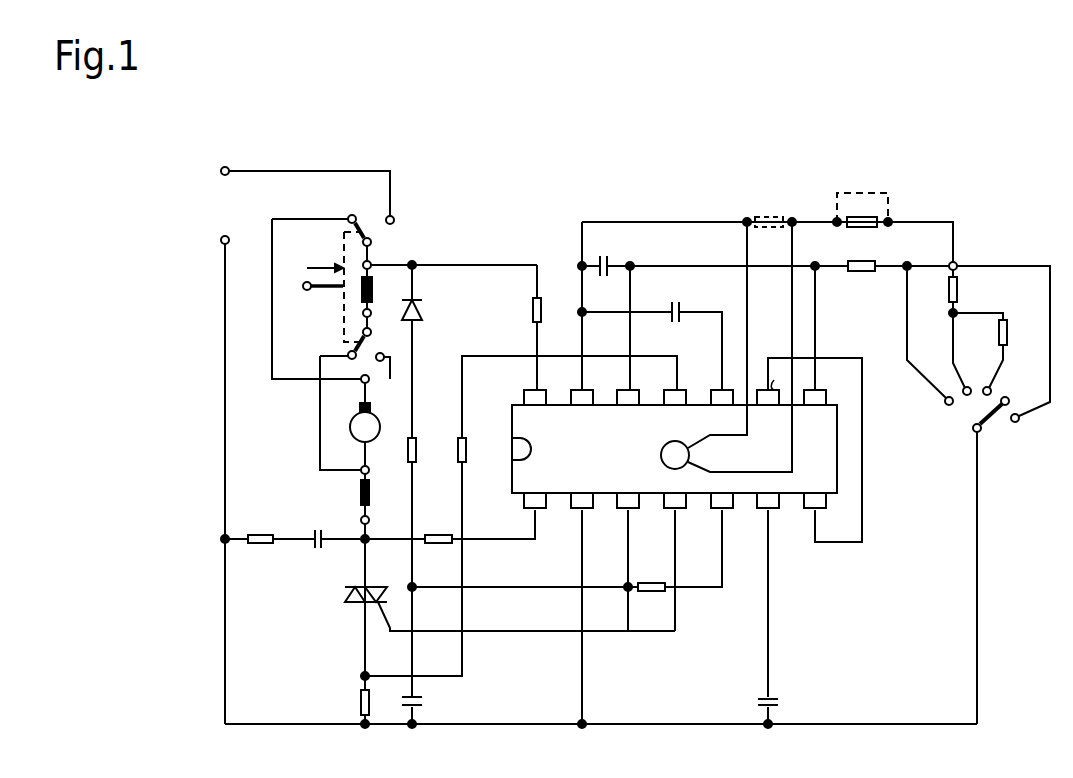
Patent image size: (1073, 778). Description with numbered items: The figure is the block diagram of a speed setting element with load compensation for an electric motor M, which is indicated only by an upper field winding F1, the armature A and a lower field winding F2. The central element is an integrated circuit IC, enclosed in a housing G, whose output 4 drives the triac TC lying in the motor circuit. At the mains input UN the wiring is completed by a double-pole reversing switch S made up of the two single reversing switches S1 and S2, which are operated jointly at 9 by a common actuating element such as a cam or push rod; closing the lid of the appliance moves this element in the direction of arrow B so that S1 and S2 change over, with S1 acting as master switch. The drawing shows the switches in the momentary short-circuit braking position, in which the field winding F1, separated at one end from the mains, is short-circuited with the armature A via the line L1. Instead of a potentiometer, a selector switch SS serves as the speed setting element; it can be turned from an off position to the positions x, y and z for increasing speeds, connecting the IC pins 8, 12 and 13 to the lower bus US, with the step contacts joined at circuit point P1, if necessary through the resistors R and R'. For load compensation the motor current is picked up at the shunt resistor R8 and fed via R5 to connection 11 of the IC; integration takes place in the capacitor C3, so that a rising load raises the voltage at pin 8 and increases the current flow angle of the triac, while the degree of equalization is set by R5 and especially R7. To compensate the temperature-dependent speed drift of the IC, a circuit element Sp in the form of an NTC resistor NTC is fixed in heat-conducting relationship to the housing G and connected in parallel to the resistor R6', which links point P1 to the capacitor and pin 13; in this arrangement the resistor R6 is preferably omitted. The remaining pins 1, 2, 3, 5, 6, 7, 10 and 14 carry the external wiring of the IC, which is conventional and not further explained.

The mains input UN is at (295, 445).
The lower bus US is at (850, 724).
The double-pole reversing switch S is at (367, 293).
The reversing switch S1 is at (373, 238).
The reversing switch S2 is at (373, 353).
The arrow B is at (324, 256).
The common operating point 9 is at (315, 286).
The upper field winding F1 is at (381, 289).
The lower field winding F2 is at (379, 506).
The line L1 is at (272, 347).
The electric motor M is at (314, 437).
The armature A is at (365, 424).
The triac TC is at (345, 590).
The shunt resistor R8 is at (360, 703).
The resistor R5 is at (467, 453).
The capacitor C3 is at (598, 264).
The resistor R6' is at (761, 197).
The resistor R6 is at (862, 196).
The resistor R7 is at (871, 246).
The circuit point P1 is at (958, 263).
The resistor R' is at (973, 329).
The resistor R is at (989, 346).
The switching position x is at (986, 386).
The switching position y is at (963, 388).
The switching position z is at (945, 401).
The selector switch SS is at (972, 413).
The integrated circuit IC is at (655, 475).
The housing G is at (836, 462).
The NTC resistor NTC is at (724, 349).
The circuit element Sp is at (661, 454).
The IC connection 1 is at (537, 511).
The IC connection 2 is at (584, 511).
The IC connection 3 is at (630, 511).
The output 4 is at (677, 511).
The IC connection 5 is at (724, 511).
The IC connection 6 is at (770, 511).
The IC connection 7 is at (817, 511).
The IC connection 8 is at (821, 380).
The IC connection 10 is at (728, 380).
The IC connection 11 is at (681, 380).
The IC connection 12 is at (634, 380).
The IC connection 13 is at (588, 380).
The IC connection 14 is at (541, 380).